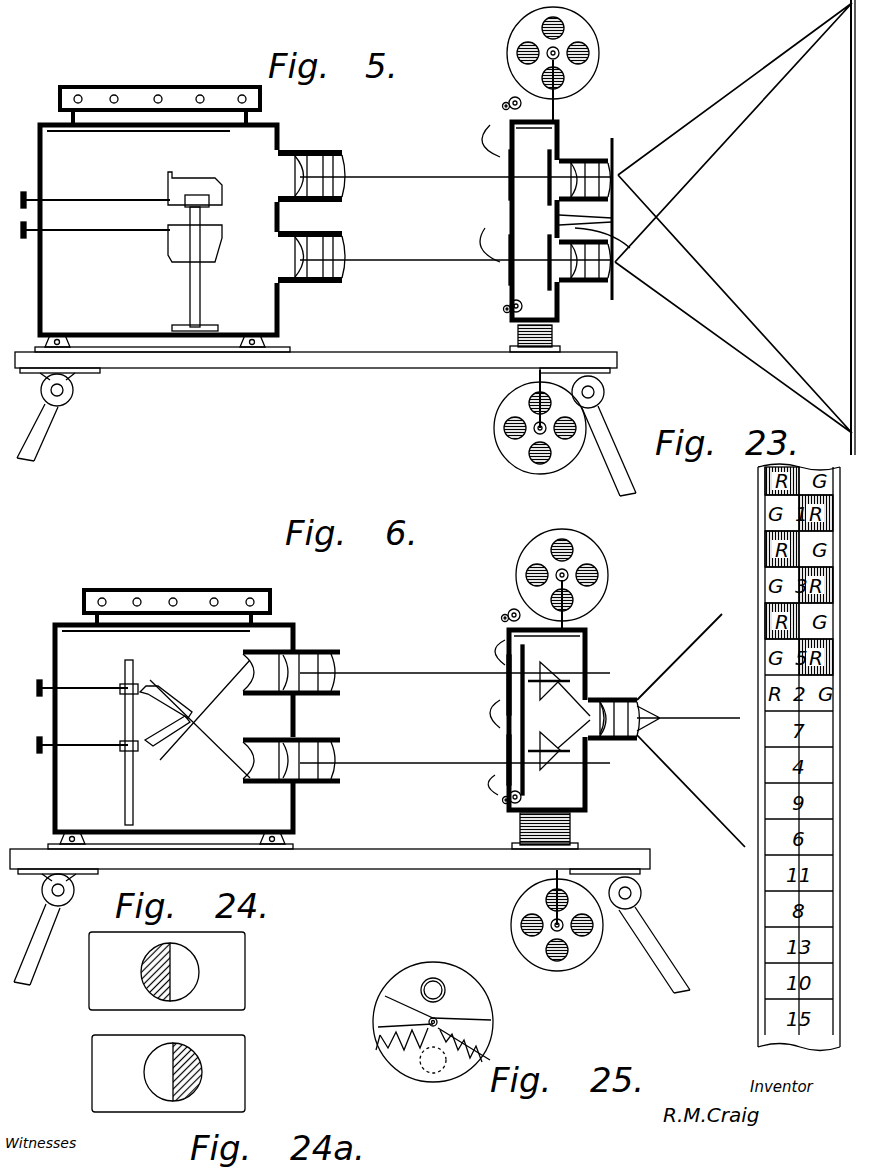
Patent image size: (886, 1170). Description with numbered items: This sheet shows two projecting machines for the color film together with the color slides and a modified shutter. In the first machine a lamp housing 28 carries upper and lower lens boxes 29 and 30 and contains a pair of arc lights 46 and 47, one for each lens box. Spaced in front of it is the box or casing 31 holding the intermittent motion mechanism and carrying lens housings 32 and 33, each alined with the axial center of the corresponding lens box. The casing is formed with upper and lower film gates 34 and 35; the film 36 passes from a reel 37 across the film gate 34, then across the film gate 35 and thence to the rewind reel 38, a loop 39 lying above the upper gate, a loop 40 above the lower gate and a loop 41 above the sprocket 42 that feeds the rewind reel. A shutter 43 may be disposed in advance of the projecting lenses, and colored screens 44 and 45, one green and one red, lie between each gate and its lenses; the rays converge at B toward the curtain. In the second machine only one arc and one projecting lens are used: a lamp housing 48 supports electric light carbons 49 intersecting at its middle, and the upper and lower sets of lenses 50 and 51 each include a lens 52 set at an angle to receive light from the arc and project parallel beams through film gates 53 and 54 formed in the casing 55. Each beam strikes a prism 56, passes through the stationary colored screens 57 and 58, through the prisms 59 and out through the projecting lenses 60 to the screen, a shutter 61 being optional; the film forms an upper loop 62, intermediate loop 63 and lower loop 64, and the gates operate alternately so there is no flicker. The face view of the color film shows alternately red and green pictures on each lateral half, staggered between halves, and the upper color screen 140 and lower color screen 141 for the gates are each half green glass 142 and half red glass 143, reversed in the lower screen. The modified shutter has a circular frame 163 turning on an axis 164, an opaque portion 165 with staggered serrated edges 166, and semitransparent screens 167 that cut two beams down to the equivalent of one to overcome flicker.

In FIG. 5, the lamp housing 28 is at (158, 217).
In FIG. 5, the upper lens box 29 is at (311, 161).
In FIG. 5, the lower lens box 30 is at (335, 280).
In FIG. 5, the box or casing 31 is at (548, 150).
In FIG. 5, the upper lens housing 32 is at (585, 168).
In FIG. 5, the lower lens housing 33 is at (611, 247).
In FIG. 5, the upper film gate 34 is at (509, 183).
In FIG. 5, the lower film gate 35 is at (509, 268).
In FIG. 5, the film 36 is at (510, 100).
In FIG. 5, the reel 37 is at (585, 30).
In FIG. 5, the rewind reel 38 is at (498, 410).
In FIG. 5, the loop 39 is at (490, 125).
In FIG. 5, the loop 40 is at (485, 228).
In FIG. 5, the loop 41 is at (503, 304).
In FIG. 5, the sprocket 42 is at (522, 308).
In FIG. 5, the shutter 43 is at (616, 292).
In FIG. 5, the colored screen 44 is at (532, 175).
In FIG. 5, the colored screen 45 is at (548, 250).
In FIG. 5, the arc light 46 is at (129, 179).
In FIG. 5, the arc light 47 is at (137, 269).
In FIG. 5, the screen rays B is at (735, 227).
In FIG. 6, the lamp housing 48 is at (55, 648).
In FIG. 6, the electric light carbons 49 is at (175, 738).
In FIG. 6, the upper set of lenses 50 is at (318, 646).
In FIG. 6, the lower set of lenses 51 is at (318, 730).
In FIG. 6, the lens 52 is at (248, 662).
In FIG. 6, the film gate 53 is at (540, 718).
In FIG. 6, the film gate 54 is at (495, 775).
In FIG. 6, the casing 55 is at (560, 680).
In FIG. 6, the prism 56 is at (560, 662).
In FIG. 6, the stationary colored screen 57 is at (560, 752).
In FIG. 6, the stationary colored screen 58 is at (570, 681).
In FIG. 6, the prism 59 is at (572, 742).
In FIG. 6, the projecting lenses 60 is at (645, 722).
In FIG. 6, the shutter 61 is at (507, 745).
In FIG. 6, the upper loop 62 is at (500, 648).
In FIG. 6, the second or intermediate loop 63 is at (507, 694).
In FIG. 6, the lower loop 64 is at (505, 797).
In FIG. 24, the upper color screen 140 is at (191, 971).
In FIG. 24A, the lower color screen 141 is at (193, 1073).
In FIG. 24, the green glass 142 is at (188, 990).
In FIG. 24A, the green glass 142 is at (152, 1060).
In FIG. 24, the red glass 143 is at (152, 992).
In FIG. 24A, the red glass 143 is at (195, 1060).
In FIG. 25, the circular frame 163 is at (490, 1010).
In FIG. 25, the axis 164 is at (437, 1018).
In FIG. 25, the opaque portion 165 is at (455, 1070).
In FIG. 25, the serrated edges 166 is at (392, 1048).
In FIG. 25, the semitransparent screens 167 is at (383, 1010).